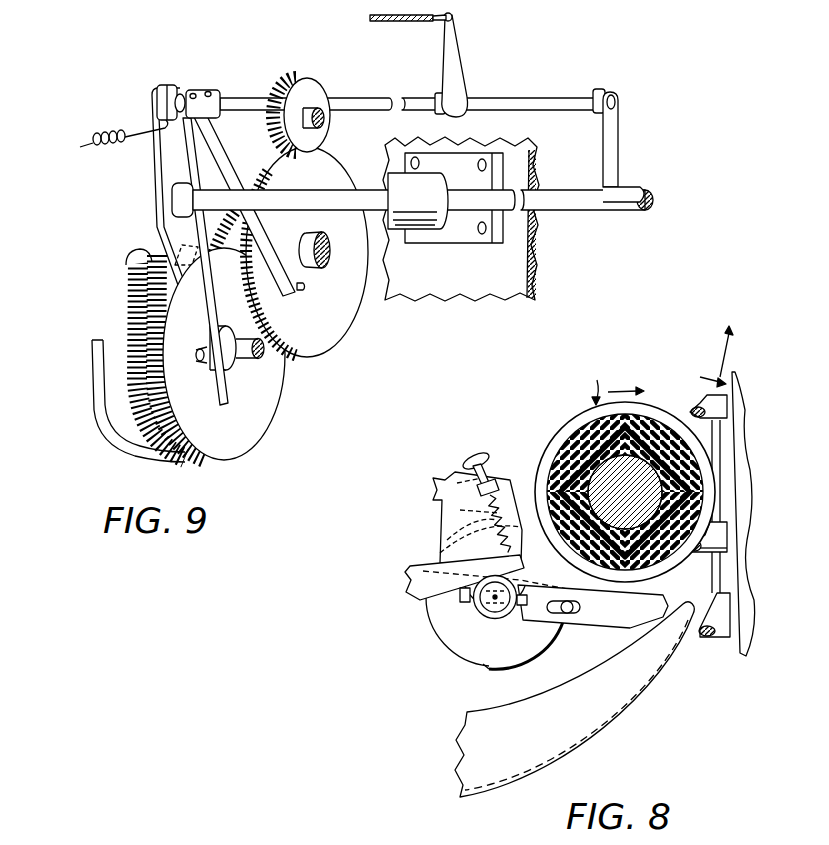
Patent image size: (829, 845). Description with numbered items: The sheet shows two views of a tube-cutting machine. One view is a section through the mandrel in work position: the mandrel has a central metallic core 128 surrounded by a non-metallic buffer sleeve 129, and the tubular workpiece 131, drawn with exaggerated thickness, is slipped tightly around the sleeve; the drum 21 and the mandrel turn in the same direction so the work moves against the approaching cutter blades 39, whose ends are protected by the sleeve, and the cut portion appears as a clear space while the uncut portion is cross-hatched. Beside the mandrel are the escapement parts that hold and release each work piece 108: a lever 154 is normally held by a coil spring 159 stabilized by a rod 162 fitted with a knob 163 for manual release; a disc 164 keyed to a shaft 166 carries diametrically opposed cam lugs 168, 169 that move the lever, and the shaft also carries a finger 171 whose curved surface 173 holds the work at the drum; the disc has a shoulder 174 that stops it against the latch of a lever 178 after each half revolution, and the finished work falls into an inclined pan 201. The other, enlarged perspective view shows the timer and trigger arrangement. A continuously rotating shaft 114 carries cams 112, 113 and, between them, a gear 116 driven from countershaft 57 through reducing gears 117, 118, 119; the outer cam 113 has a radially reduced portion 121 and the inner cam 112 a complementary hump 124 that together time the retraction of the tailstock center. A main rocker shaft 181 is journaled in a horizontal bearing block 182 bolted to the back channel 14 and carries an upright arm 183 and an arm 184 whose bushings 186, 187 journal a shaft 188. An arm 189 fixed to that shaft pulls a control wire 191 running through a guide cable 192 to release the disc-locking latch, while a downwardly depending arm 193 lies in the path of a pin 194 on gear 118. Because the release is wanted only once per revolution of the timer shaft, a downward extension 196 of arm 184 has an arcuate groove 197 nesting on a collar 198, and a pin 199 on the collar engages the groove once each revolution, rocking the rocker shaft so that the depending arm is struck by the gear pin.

In FIG. 9, the back channel 14 is at (543, 242).
In FIG. 8, the drum 21 is at (716, 491).
In FIG. 8, the cutter blades 39 is at (703, 402).
In FIG. 9, the countershaft 57 is at (322, 124).
In FIG. 8, the work piece 108 is at (605, 383).
In FIG. 9, the cam 112 is at (258, 417).
In FIG. 9, the outer cam 113 is at (93, 343).
In FIG. 9, the shaft 114 is at (270, 343).
In FIG. 9, the gear 116 is at (137, 293).
In FIG. 9, the reducing gear 117 is at (287, 80).
In FIG. 9, the gear 118 is at (340, 333).
In FIG. 9, the reducing gear 119 is at (213, 230).
In FIG. 9, the radially reduced portion 121 is at (127, 275).
In FIG. 9, the hump 124 is at (152, 311).
In FIG. 8, the central metallic core 128 is at (612, 466).
In FIG. 8, the non-metallic buffer sleeve 129 is at (600, 445).
In FIG. 8, the workpiece 131 is at (586, 410).
In FIG. 8, the lever 154 is at (457, 562).
In FIG. 8, the coil spring 159 is at (495, 530).
In FIG. 8, the rod 162 is at (490, 483).
In FIG. 8, the knob 163 is at (486, 455).
In FIG. 8, the disc 164 is at (541, 655).
In FIG. 8, the shaft 166 is at (495, 599).
In FIG. 8, the cam lug 168 is at (528, 604).
In FIG. 8, the cam lug 169 is at (463, 598).
In FIG. 8, the finger 171 is at (633, 628).
In FIG. 8, the curved surface 173 is at (600, 597).
In FIG. 8, the shoulder 174 is at (483, 665).
In FIG. 8, the lever 178 is at (443, 475).
In FIG. 9, the main rocker shaft 181 is at (547, 190).
In FIG. 9, the horizontal bearing block 182 is at (385, 168).
In FIG. 9, the upright arm 183 is at (620, 168).
In FIG. 9, the arm 184 is at (168, 150).
In FIG. 9, the bushing 186 is at (600, 88).
In FIG. 9, the bushing 187 is at (180, 90).
In FIG. 9, the shaft 188 is at (474, 94).
In FIG. 9, the arm 189 is at (457, 70).
In FIG. 9, the control wire 191 is at (437, 22).
In FIG. 9, the guide cable 192 is at (393, 24).
In FIG. 9, the downwardly depending arm 193 is at (226, 137).
In FIG. 9, the pin 194 is at (307, 287).
In FIG. 9, the downward extension 196 is at (203, 292).
In FIG. 9, the arcuate groove 197 is at (212, 334).
In FIG. 9, the collar 198 is at (258, 368).
In FIG. 9, the pin 199 is at (217, 363).
In FIG. 8, the inclined pan 201 is at (535, 703).